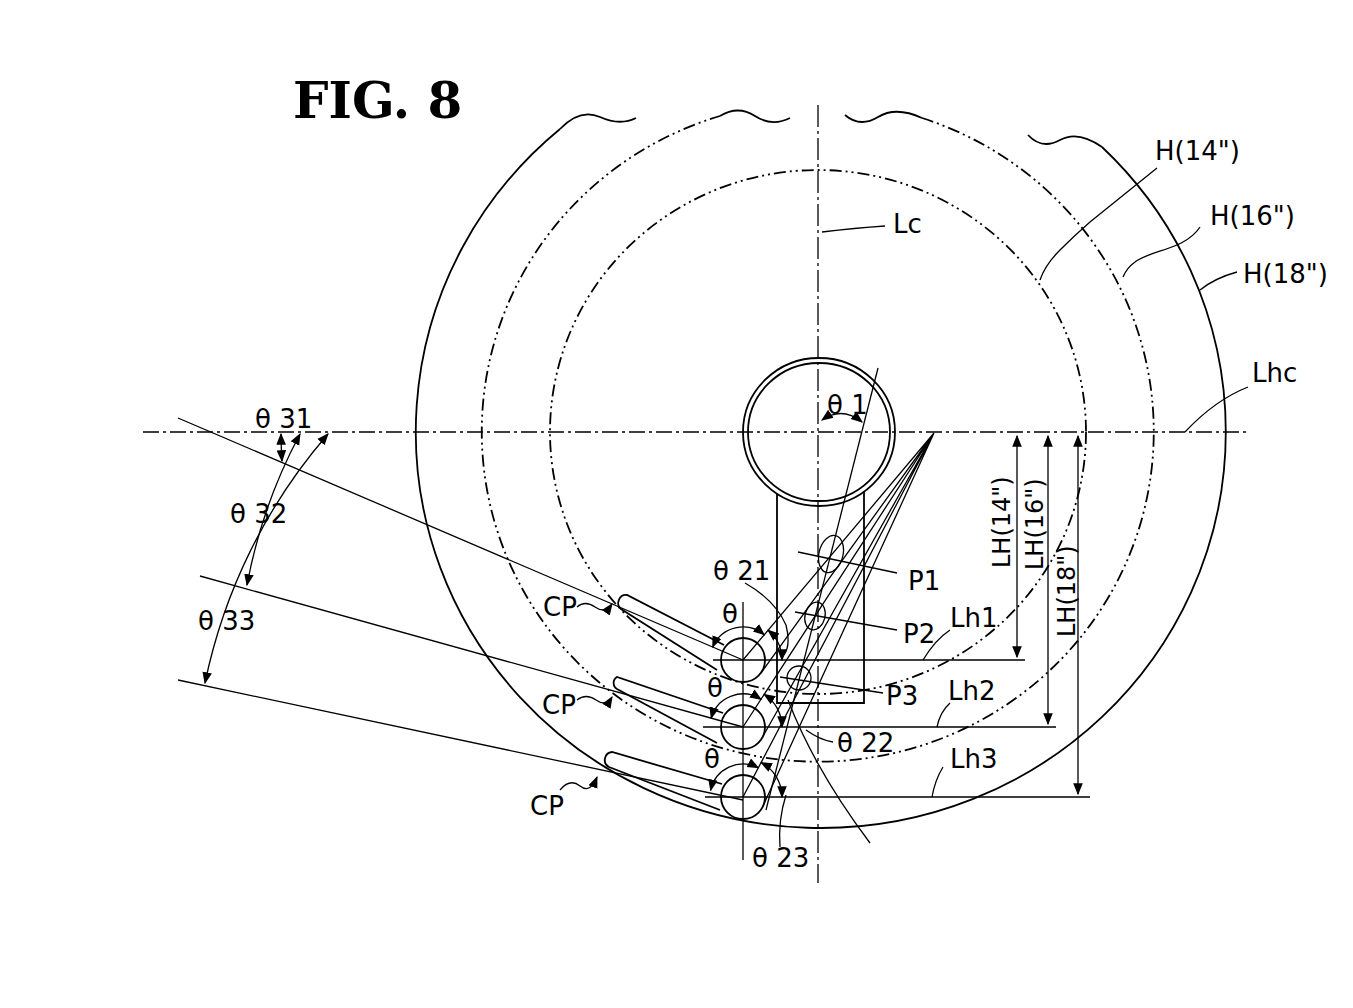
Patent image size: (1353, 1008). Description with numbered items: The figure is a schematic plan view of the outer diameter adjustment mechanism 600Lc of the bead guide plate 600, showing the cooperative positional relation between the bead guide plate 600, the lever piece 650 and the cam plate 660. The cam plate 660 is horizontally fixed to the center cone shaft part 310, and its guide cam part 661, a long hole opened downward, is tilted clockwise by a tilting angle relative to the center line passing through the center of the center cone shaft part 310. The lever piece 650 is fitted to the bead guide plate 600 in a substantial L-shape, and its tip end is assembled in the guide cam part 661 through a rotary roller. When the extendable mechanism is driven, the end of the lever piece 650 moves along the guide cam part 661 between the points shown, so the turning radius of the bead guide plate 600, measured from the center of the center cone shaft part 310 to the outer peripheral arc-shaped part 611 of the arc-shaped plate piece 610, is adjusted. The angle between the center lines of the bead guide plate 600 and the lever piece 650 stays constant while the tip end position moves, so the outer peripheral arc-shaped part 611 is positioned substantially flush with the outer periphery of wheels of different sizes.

The center cone shaft part 310 is at (843, 373).
The bead guide plate 600 is at (617, 744).
The outer diameter adjustment mechanism 600Lc is at (705, 335).
The arc-shaped plate piece 610 is at (640, 753).
The outer peripheral arc-shaped part 611 is at (693, 802).
The lever piece 650 is at (855, 788).
The cam plate 660 is at (790, 517).
The guide cam part 661 is at (832, 540).